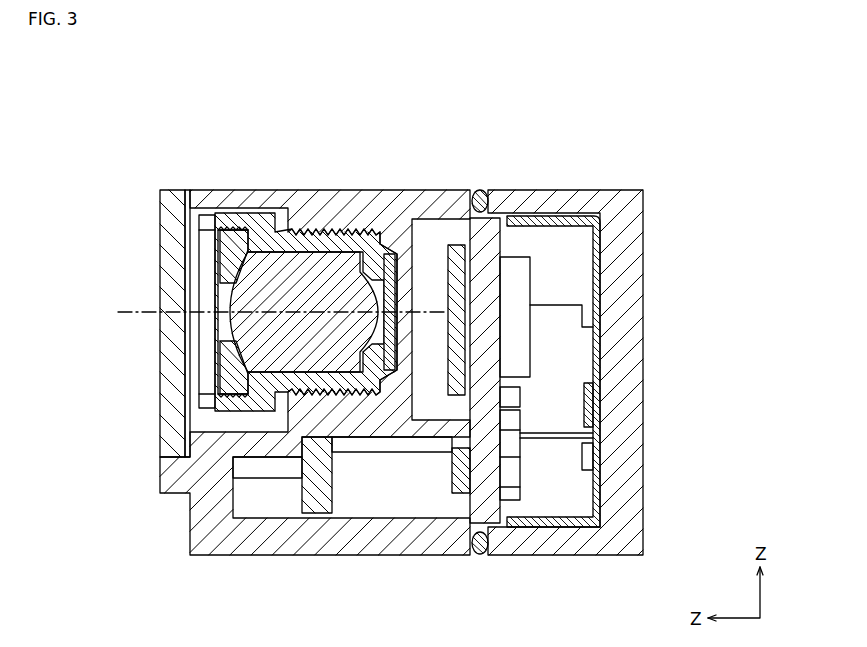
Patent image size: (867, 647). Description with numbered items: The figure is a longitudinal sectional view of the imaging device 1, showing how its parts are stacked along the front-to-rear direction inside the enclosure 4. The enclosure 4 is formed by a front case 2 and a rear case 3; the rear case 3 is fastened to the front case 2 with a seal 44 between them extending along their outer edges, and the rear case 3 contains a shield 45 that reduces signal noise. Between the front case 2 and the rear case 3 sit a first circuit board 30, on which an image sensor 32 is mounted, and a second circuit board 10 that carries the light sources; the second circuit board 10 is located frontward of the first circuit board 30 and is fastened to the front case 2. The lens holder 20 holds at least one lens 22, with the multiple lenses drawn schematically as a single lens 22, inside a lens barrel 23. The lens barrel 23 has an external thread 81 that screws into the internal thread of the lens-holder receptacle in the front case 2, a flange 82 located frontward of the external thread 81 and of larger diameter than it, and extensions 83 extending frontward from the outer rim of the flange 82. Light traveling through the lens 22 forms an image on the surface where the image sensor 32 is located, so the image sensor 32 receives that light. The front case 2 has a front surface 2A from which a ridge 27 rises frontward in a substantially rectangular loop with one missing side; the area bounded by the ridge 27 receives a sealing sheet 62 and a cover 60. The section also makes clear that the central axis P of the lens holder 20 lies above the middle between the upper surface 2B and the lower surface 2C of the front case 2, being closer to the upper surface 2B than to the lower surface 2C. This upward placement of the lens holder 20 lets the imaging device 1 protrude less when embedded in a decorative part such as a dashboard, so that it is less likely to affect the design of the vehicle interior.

The imaging device 1 is at (190, 80).
The front case 2 is at (383, 172).
The front surface 2A is at (185, 443).
The upper surface 2B is at (285, 215).
The lower surface 2C is at (312, 557).
The rear case 3 is at (527, 172).
The enclosure 4 is at (523, 85).
The second circuit board 10 is at (327, 478).
The lens holder 20 is at (207, 417).
The lens 22 is at (240, 327).
The lens barrel 23 is at (293, 200).
The ridge 27 is at (173, 483).
The first circuit board 30 is at (492, 370).
The image sensor 32 is at (458, 288).
The seal 44 is at (478, 190).
The shield 45 is at (598, 335).
The cover 60 is at (165, 232).
The sealing sheet 62 is at (188, 190).
The external thread 81 is at (332, 226).
The flange 82 is at (245, 212).
The extensions 83 is at (207, 337).
The central axis P is at (138, 313).